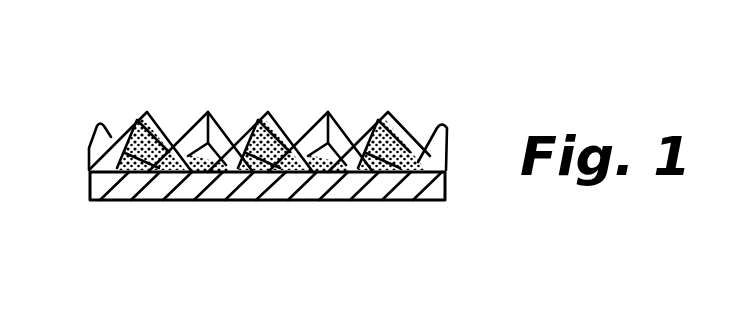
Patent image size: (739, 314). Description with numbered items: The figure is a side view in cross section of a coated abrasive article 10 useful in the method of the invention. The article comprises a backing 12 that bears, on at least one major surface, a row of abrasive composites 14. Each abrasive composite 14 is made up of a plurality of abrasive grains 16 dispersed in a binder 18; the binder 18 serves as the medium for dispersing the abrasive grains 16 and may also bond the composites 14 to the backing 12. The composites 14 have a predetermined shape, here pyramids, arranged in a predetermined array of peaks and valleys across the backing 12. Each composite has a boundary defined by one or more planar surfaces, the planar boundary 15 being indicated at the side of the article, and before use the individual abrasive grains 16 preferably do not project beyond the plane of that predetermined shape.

The abrasive article 10 is at (296, 156).
The backing 12 is at (92, 192).
The abrasive composites 14 is at (222, 115).
The planar boundary 15 is at (118, 132).
The abrasive grains 16 is at (266, 172).
The binder 18 is at (410, 128).